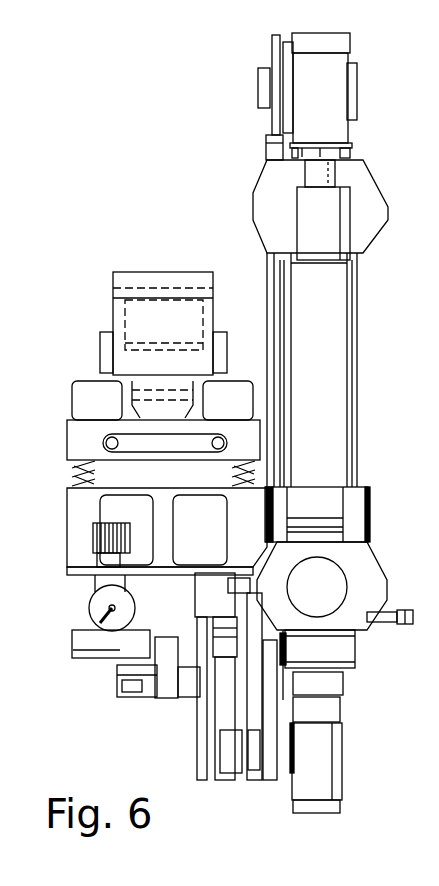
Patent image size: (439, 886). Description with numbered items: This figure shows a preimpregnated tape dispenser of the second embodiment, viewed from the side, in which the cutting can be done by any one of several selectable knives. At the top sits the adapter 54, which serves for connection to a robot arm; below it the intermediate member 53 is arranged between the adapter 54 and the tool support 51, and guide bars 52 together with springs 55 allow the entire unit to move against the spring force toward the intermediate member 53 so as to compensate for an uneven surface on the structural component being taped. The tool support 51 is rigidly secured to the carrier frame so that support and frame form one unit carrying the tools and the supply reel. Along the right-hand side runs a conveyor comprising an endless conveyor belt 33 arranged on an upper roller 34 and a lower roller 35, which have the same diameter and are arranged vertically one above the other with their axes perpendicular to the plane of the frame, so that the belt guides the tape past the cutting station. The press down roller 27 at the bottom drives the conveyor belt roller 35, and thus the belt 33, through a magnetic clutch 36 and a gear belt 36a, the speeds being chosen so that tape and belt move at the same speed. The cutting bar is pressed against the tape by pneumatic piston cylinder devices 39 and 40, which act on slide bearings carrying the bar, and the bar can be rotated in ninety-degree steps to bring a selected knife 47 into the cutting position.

The press down roller 27 is at (325, 805).
The endless conveyor belt 33 is at (327, 652).
The conveyor belt roller 34 is at (352, 82).
The conveyor belt roller 35 is at (353, 653).
The magnetic clutch 36 is at (238, 765).
The gear belt 36a is at (200, 703).
The pneumatic piston cylinder device 39 is at (363, 173).
The pneumatic piston cylinder device 40 is at (372, 565).
The knife 47 is at (355, 497).
The tool support 51 is at (73, 545).
The guide bars 52 is at (70, 470).
The intermediate member 53 is at (72, 437).
The adapter 54 is at (152, 272).
The springs 55 is at (240, 472).